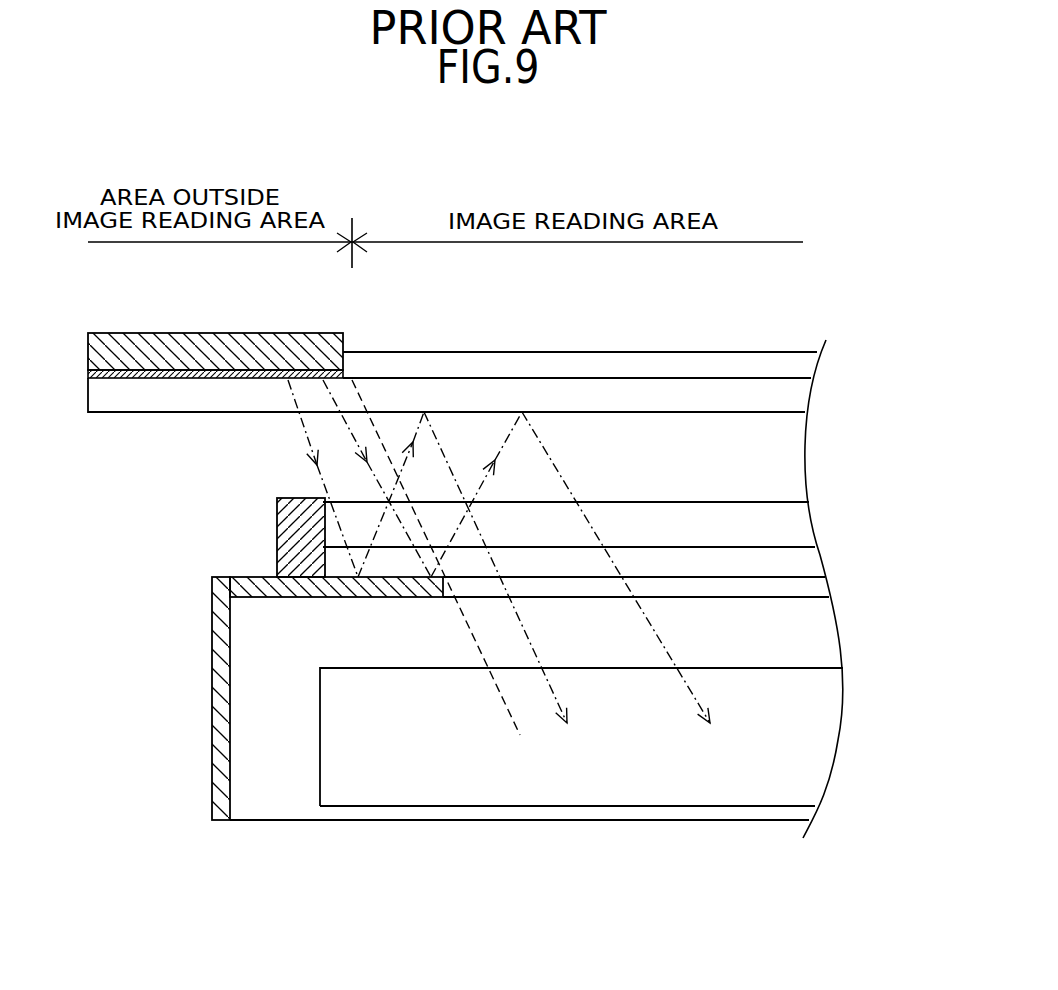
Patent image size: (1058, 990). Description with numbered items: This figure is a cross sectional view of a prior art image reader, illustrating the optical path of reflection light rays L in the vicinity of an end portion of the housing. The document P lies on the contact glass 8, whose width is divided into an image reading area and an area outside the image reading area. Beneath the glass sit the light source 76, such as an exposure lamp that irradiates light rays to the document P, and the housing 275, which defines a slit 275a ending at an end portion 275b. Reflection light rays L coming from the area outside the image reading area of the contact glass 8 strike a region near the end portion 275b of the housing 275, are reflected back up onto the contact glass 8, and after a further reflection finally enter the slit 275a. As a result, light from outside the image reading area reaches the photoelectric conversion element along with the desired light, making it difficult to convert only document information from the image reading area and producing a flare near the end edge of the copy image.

The contact glass 8 is at (102, 393).
The document P is at (647, 366).
The light source 76 is at (782, 529).
The housing 275 is at (212, 674).
The slit 275a is at (793, 588).
The end portion 275b is at (405, 577).
The reflection light rays L is at (352, 433).